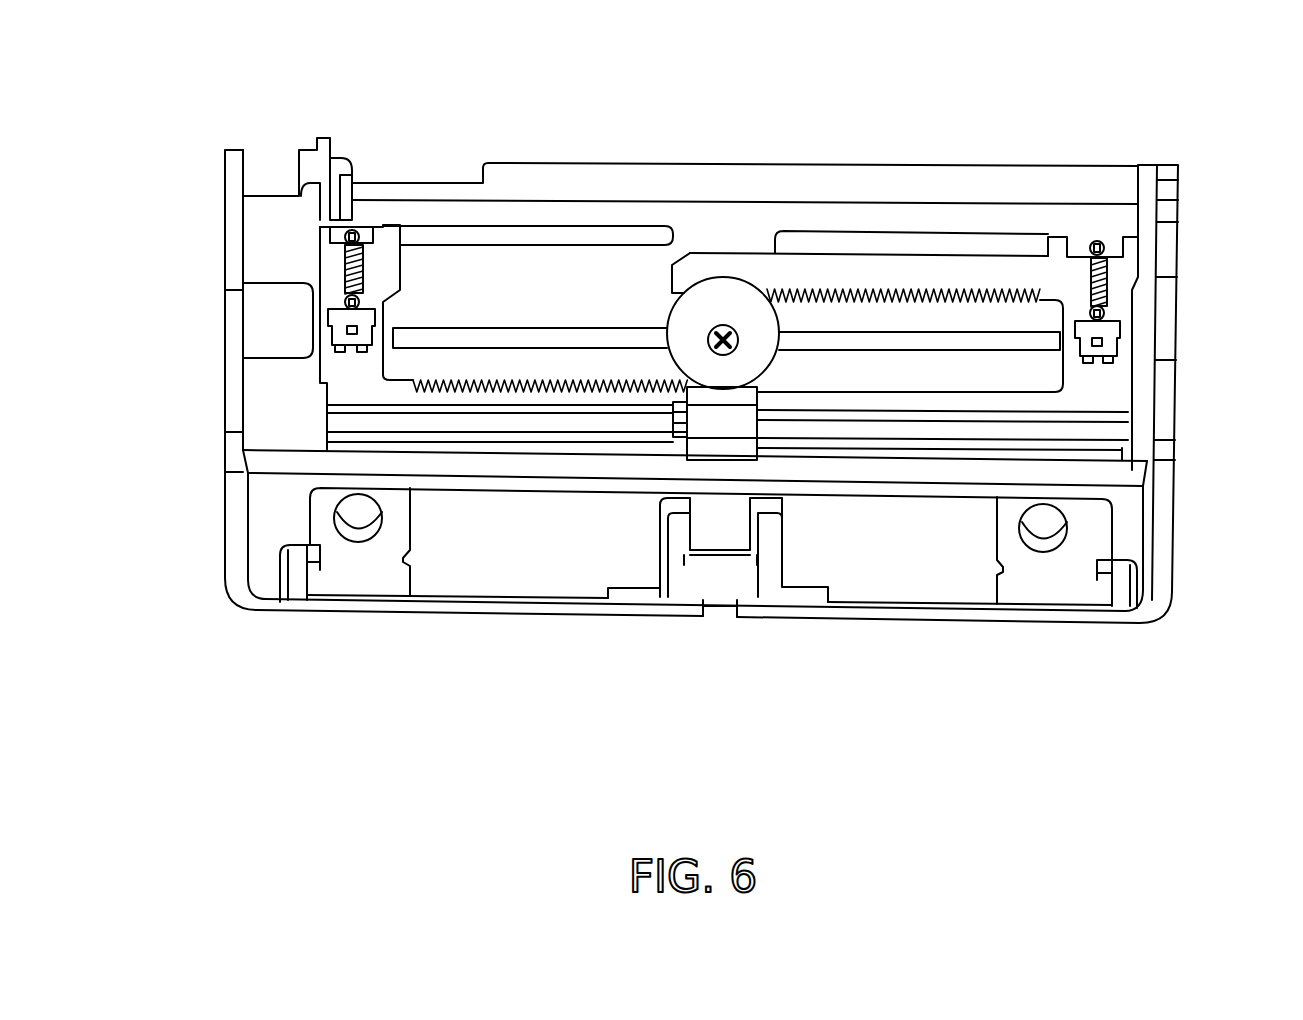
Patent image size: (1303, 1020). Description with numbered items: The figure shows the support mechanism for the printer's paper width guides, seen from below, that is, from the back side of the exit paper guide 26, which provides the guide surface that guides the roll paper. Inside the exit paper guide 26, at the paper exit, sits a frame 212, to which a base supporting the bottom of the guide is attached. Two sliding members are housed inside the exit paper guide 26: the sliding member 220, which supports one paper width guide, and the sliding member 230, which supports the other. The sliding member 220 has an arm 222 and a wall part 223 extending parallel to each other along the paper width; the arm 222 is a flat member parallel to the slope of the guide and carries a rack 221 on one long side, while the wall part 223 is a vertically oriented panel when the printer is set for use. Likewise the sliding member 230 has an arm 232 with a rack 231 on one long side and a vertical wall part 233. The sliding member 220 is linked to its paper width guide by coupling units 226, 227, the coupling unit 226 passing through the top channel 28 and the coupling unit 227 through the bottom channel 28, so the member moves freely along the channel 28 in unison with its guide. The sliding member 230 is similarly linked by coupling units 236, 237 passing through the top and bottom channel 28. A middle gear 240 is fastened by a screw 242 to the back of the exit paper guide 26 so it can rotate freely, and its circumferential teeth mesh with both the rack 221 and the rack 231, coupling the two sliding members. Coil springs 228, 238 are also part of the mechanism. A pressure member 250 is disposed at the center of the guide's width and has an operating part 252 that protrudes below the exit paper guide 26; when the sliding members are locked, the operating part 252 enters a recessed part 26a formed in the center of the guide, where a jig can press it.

The exit paper guide 26 is at (280, 192).
The recessed part 26a is at (737, 622).
The channel 28 is at (593, 337).
The frame 212 is at (935, 588).
The sliding member 220 is at (400, 273).
The rack 221 is at (445, 394).
The arm 222 is at (510, 402).
The wall part 223 is at (338, 423).
The coupling unit 226 is at (338, 236).
The coupling unit 227 is at (338, 337).
The coil spring 228 is at (363, 268).
The sliding member 230 is at (1020, 252).
The rack 231 is at (897, 285).
The arm 232 is at (942, 278).
The wall part 233 is at (1123, 428).
The coupling unit 236 is at (1113, 245).
The coupling unit 237 is at (1113, 347).
The coil spring 238 is at (1080, 287).
The middle gear 240 is at (740, 310).
The screw 242 is at (722, 325).
The pressure member 250 is at (663, 598).
The operating part 252 is at (722, 602).